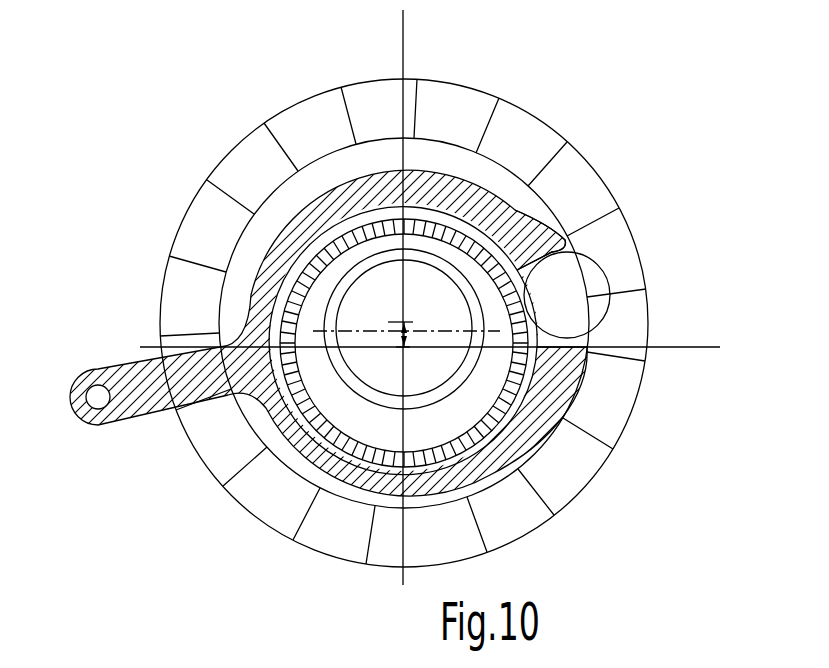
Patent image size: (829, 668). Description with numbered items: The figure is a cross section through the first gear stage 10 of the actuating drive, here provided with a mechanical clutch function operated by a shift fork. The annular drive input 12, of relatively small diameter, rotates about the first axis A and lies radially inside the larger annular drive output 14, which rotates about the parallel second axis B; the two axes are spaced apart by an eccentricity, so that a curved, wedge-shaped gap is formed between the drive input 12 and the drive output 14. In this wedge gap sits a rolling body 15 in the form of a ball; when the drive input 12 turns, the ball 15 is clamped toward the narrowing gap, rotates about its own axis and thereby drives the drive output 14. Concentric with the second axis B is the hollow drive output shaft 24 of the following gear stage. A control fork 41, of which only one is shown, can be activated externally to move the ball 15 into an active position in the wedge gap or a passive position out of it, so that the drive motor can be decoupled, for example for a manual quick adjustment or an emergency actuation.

The first gear stage 10 is at (286, 86).
The drive input 12 is at (475, 213).
The drive output 14 is at (462, 118).
The rolling body 15 is at (553, 292).
The drive output shaft 24 is at (453, 380).
The control fork 41 is at (553, 205).
The first axis A is at (402, 347).
The second axis B is at (400, 321).